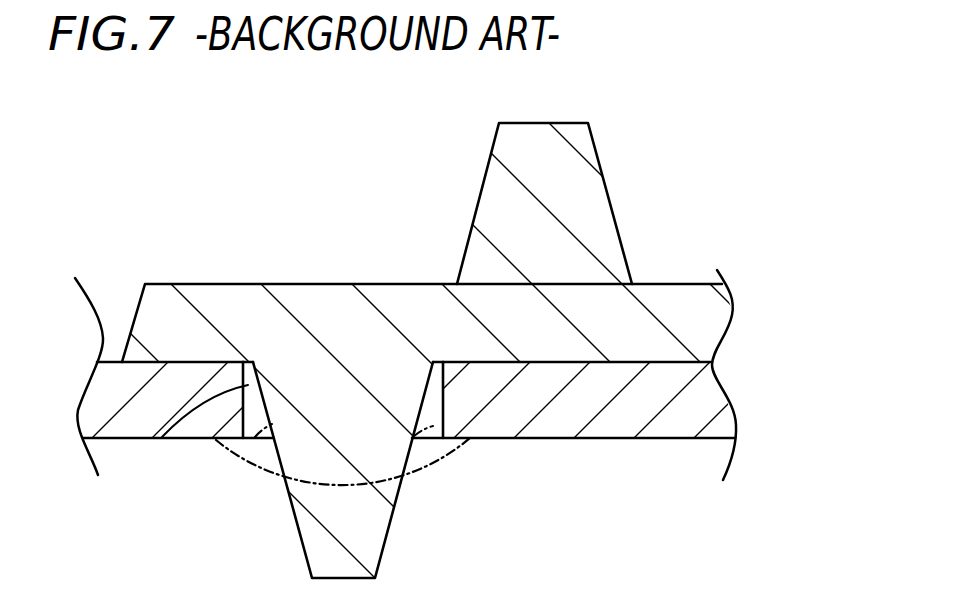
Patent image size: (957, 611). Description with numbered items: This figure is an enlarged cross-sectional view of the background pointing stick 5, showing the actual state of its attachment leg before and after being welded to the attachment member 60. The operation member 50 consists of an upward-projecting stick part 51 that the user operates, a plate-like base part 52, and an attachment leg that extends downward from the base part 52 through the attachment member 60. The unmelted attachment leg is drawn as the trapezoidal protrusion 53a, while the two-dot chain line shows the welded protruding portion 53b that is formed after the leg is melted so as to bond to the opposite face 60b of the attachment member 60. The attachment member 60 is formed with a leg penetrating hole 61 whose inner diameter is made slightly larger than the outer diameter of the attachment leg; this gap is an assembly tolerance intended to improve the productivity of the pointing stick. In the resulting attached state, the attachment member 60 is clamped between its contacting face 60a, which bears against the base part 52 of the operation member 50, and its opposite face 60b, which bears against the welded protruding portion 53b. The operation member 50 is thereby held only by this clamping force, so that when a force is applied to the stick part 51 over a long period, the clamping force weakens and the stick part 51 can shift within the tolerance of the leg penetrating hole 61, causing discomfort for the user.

The background pointing stick 5 is at (352, 180).
The operation member 50 is at (645, 202).
The stick part 51 is at (532, 123).
The base part 52 is at (223, 284).
The trapezoidal protrusion 53a is at (387, 540).
The welded protruding portion 53b is at (433, 462).
The attachment member 60 is at (667, 425).
The contacting face 60a is at (177, 360).
The opposite face 60b is at (218, 440).
The leg penetrating hole 61 is at (162, 437).